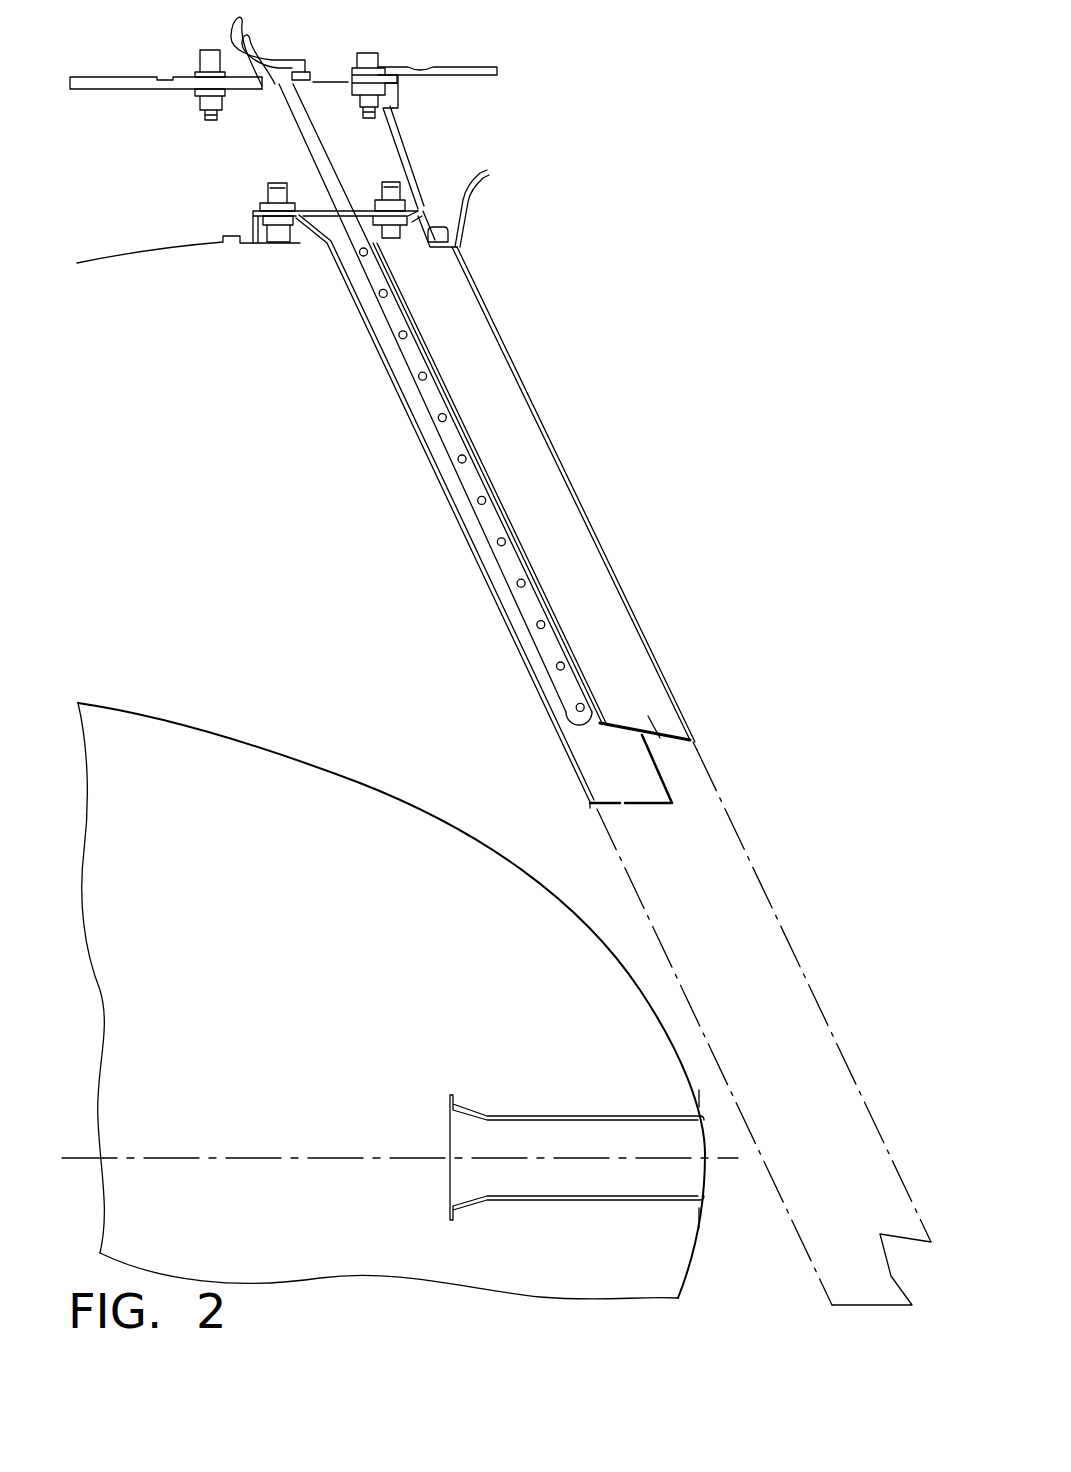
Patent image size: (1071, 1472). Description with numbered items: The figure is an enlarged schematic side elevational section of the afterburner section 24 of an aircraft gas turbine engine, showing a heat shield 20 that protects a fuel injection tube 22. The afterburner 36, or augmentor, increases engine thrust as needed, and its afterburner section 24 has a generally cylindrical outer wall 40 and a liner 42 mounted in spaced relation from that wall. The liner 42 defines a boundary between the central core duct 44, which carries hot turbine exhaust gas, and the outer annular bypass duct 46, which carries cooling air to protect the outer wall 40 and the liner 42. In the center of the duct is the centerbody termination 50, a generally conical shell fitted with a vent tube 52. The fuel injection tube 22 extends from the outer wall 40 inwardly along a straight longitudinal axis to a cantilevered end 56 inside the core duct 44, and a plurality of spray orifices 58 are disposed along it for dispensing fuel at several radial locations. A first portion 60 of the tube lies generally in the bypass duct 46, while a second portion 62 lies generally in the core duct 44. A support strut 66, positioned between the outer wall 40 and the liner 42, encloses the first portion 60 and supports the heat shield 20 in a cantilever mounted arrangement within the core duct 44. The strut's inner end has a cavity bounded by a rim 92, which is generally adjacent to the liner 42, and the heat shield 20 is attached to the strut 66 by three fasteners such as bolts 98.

The heat shield 20 is at (443, 492).
The fuel injection tube 22 is at (496, 545).
The afterburner section 24 is at (640, 222).
The afterburner 36 is at (540, 406).
The outer wall 40 is at (125, 90).
The liner 42 is at (148, 257).
The core duct 44 is at (189, 428).
The bypass duct 46 is at (146, 191).
The centerbody termination 50 is at (301, 758).
The vent tube 52 is at (580, 1116).
The cantilevered end 56 is at (584, 720).
The spray orifices 58 is at (419, 379).
The first portion 60 is at (324, 144).
The second portion 62 is at (442, 433).
The support strut 66 is at (405, 131).
The rim 92 is at (255, 213).
The bolts 98 is at (278, 242).